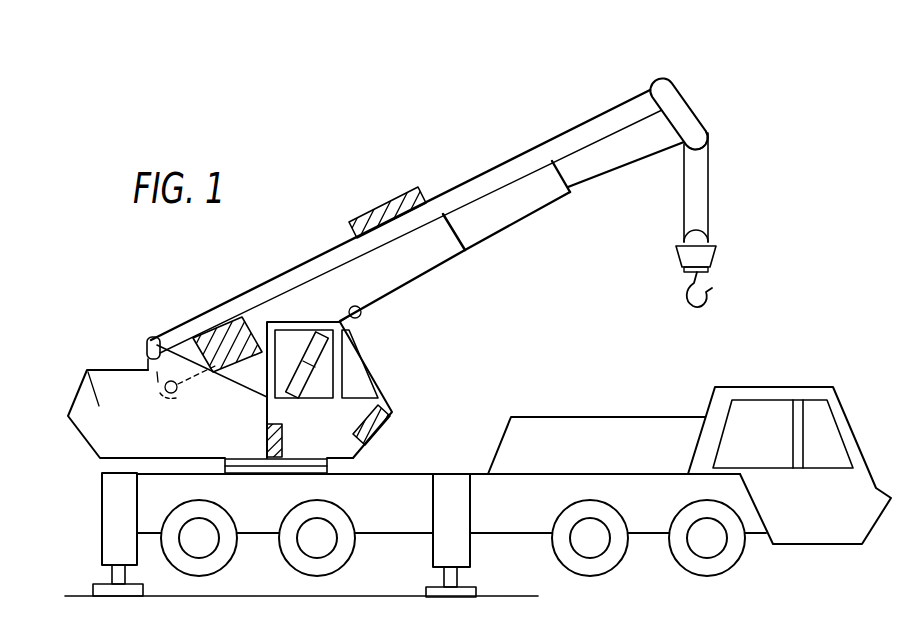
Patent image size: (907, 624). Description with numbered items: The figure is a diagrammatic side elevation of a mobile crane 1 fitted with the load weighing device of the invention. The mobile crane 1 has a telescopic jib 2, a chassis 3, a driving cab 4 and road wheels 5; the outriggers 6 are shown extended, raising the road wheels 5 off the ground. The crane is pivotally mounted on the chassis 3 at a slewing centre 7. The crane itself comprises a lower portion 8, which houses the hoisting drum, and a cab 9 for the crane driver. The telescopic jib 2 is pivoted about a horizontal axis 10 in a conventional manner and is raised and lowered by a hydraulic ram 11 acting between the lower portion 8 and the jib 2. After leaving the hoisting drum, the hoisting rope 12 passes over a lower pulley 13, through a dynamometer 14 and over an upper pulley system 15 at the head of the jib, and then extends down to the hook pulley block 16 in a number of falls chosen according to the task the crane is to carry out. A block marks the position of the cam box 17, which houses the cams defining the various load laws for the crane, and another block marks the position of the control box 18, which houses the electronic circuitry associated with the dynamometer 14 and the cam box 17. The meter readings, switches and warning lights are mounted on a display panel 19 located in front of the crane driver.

The mobile crane 1 is at (316, 241).
The telescopic jib 2 is at (619, 166).
The chassis 3 is at (521, 522).
The driving cab 4 is at (806, 520).
The road wheels 5 is at (283, 556).
The outriggers 6 is at (103, 519).
The slewing centre 7 is at (225, 465).
The lower portion 8 is at (87, 370).
The cab 9 is at (383, 392).
The horizontal axis 10 is at (162, 390).
The hydraulic ram 11 is at (318, 362).
The hoisting rope 12 is at (281, 273).
The lower pulley 13 is at (149, 337).
The dynamometer 14 is at (395, 205).
The upper pulley system 15 is at (683, 122).
The hook pulley block 16 is at (701, 252).
The cam box 17 is at (216, 329).
The control box 18 is at (265, 441).
The display panel 19 is at (393, 424).